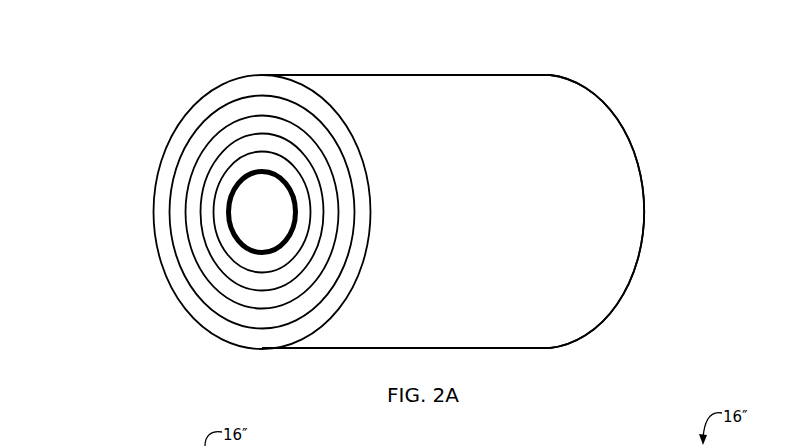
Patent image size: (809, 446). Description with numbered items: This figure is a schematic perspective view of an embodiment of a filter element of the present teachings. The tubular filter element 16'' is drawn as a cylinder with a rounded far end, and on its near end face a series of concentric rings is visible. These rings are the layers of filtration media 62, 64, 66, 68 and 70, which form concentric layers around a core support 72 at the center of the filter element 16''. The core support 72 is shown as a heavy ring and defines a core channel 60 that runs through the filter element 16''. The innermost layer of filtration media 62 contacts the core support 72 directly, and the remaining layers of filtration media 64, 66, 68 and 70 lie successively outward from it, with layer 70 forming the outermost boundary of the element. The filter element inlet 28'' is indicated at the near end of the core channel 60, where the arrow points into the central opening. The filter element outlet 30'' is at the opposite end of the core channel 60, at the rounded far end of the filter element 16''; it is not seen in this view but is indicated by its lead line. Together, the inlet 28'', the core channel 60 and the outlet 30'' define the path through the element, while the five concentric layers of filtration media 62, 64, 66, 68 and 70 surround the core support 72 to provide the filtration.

The tubular filter element 16'' is at (453, 185).
The filter element outlet 30'' is at (651, 211).
The layer of filtration media 70 is at (171, 130).
The layer of filtration media 68 is at (178, 162).
The layer of filtration media 66 is at (187, 192).
The layer of filtration media 64 is at (200, 218).
The innermost layer of filtration media 62 is at (220, 243).
The core support 72 is at (296, 212).
The core channel 60 is at (262, 212).
The filter element inlet 28'' is at (214, 259).